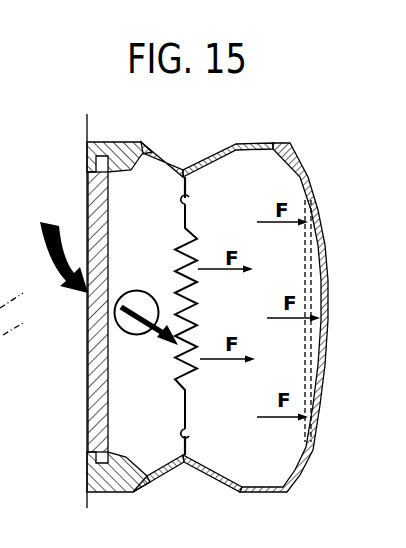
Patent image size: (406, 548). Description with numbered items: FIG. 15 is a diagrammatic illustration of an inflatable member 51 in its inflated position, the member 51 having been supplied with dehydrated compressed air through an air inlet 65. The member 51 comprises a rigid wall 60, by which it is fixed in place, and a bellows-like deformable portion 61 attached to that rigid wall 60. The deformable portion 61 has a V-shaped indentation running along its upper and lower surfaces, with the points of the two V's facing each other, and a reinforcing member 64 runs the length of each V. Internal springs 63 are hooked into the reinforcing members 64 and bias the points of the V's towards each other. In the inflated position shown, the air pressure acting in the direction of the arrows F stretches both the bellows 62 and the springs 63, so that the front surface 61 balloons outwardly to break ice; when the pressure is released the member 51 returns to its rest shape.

The inflatable member 51 is at (166, 148).
The rigid wall 60 is at (98, 237).
The bellows-like deformable portion 61 is at (323, 265).
The bottom shell wall 62 is at (222, 467).
The internal springs 63 is at (178, 278).
The reinforcing member 64 is at (198, 167).
The air inlet 65 is at (121, 329).